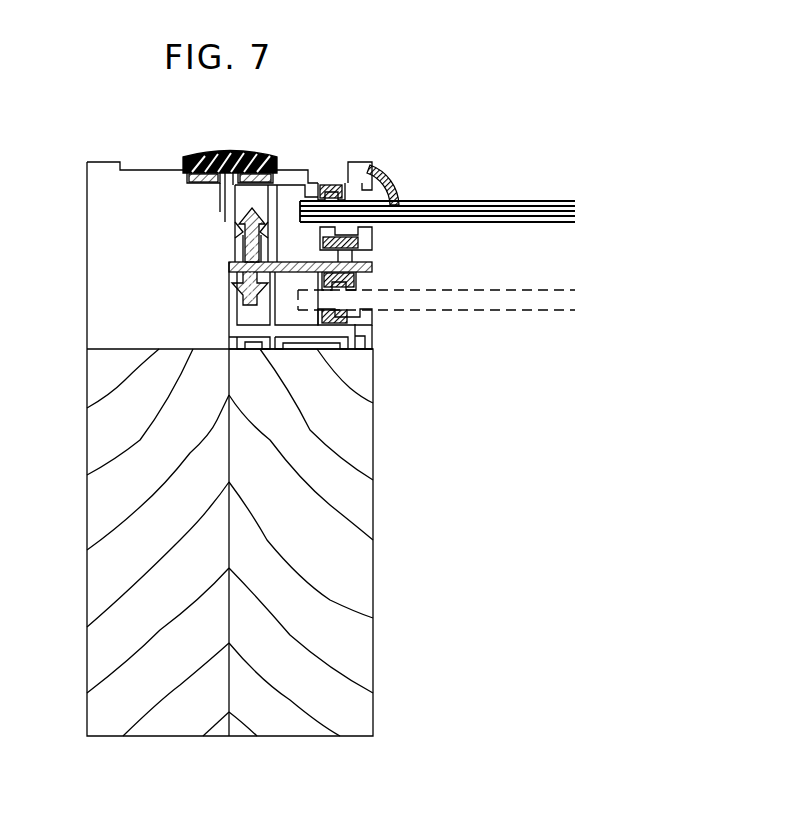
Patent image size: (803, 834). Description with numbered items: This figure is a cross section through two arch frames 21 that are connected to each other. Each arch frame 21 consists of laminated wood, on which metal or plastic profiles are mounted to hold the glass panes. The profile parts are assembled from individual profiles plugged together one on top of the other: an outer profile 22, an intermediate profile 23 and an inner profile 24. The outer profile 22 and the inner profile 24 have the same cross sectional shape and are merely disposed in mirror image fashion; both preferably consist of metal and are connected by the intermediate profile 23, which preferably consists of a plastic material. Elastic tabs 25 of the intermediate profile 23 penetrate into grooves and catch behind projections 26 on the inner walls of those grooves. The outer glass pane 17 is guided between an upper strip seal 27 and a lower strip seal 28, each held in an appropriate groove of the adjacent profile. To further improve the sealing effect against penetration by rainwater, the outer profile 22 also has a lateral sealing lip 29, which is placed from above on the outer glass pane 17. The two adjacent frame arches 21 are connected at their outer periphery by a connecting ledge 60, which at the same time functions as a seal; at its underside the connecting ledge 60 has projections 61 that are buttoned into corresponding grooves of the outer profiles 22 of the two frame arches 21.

The outer glass pane 17 is at (488, 201).
The arch frame 21 is at (89, 515).
The outer profile 22 is at (302, 168).
The intermediate profile 23 is at (293, 262).
The inner profile 24 is at (292, 349).
The elastic tab 25 is at (253, 306).
The projection 26 is at (238, 226).
The upper strip seal 27 is at (333, 188).
The lower strip seal 28 is at (372, 238).
The lateral sealing lip 29 is at (388, 180).
The connecting ledge 60 is at (242, 150).
The projection 61 is at (278, 170).